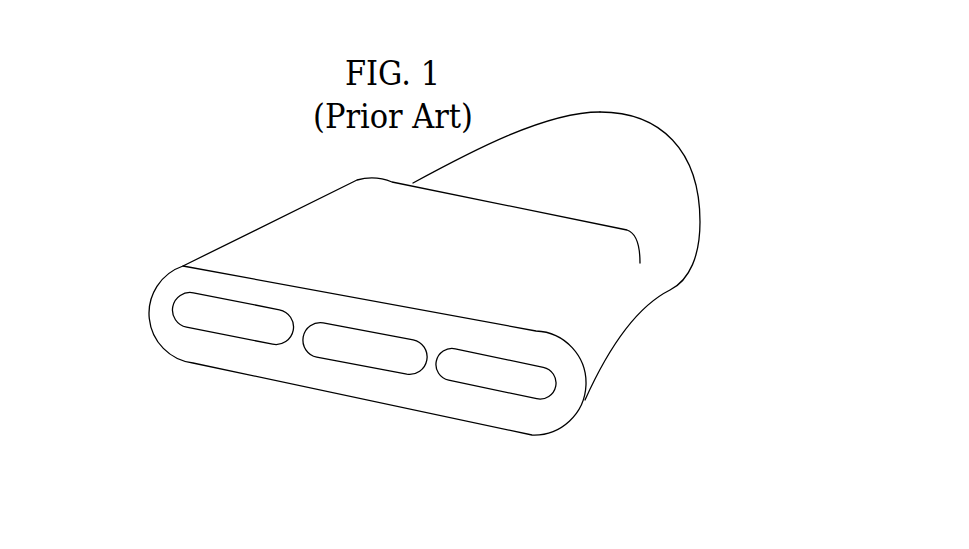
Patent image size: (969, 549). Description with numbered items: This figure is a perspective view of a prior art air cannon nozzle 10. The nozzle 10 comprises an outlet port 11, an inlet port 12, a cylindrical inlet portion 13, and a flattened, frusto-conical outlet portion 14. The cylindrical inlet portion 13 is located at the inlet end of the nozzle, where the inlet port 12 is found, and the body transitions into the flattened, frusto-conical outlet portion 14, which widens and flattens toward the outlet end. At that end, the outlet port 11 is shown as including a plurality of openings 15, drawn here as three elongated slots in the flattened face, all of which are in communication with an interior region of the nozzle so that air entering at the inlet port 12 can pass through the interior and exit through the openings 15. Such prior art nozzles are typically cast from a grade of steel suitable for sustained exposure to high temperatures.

The prior art air cannon nozzle 10 is at (260, 195).
The outlet port 11 is at (195, 332).
The inlet port 12 is at (667, 133).
The cylindrical inlet portion 13 is at (543, 133).
The flattened, frusto-conical outlet portion 14 is at (240, 255).
The openings 15 is at (275, 338).